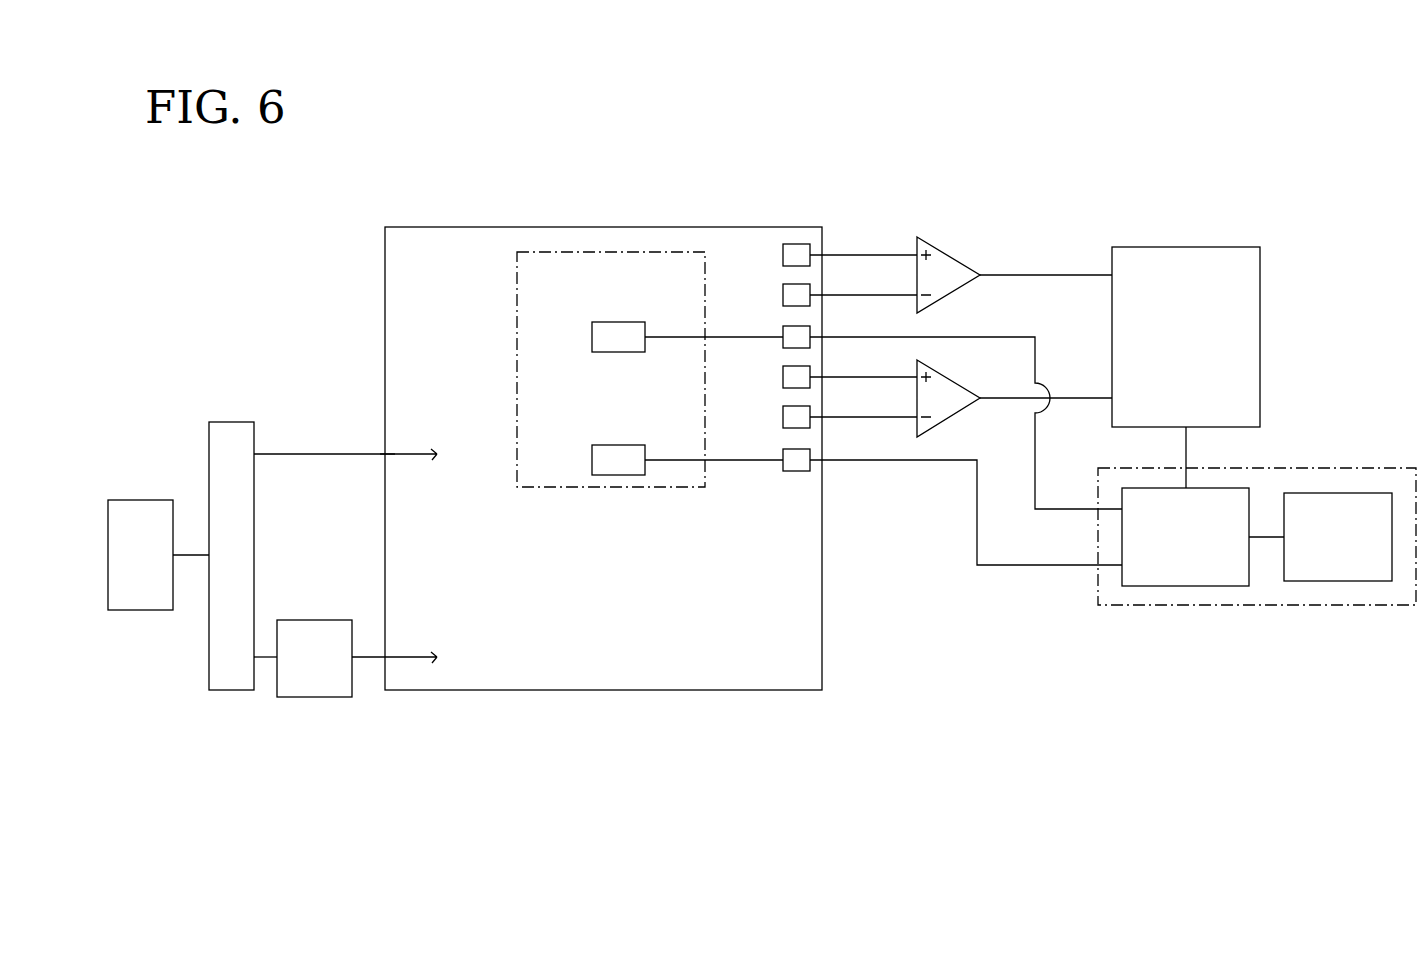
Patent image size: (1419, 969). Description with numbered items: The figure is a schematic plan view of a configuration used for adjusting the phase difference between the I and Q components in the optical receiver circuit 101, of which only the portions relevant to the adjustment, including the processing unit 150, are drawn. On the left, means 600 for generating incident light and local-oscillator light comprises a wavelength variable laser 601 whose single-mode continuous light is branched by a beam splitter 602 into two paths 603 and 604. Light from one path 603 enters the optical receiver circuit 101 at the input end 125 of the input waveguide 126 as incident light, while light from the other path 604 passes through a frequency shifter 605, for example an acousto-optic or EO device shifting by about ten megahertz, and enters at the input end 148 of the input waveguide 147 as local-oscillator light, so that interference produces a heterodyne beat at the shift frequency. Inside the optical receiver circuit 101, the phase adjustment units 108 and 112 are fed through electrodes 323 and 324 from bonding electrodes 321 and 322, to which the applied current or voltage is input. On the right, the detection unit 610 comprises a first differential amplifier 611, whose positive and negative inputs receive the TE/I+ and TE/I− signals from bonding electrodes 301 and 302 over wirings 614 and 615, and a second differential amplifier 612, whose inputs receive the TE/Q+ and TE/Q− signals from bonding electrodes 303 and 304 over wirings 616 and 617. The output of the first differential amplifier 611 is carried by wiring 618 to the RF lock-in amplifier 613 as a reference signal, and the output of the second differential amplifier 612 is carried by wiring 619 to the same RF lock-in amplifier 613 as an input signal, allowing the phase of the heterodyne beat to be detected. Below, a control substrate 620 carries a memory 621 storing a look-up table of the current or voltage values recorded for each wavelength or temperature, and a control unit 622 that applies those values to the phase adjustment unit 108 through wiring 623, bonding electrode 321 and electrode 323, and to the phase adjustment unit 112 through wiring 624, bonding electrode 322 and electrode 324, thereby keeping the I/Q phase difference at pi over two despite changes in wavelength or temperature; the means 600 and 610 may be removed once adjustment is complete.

The means for generating incident light and local-oscillator light 600 is at (183, 686).
The wavelength variable laser 601 is at (138, 498).
The beam splitter 602 is at (230, 420).
The path 603 is at (286, 452).
The path 604 is at (266, 660).
The frequency shifter 605 is at (294, 672).
The input end 125 is at (383, 452).
The input waveguide 126 is at (410, 452).
The input waveguide 147 is at (410, 655).
The input end 148 is at (383, 655).
The optical receiver circuit 101 is at (385, 254).
The processing unit 150 is at (517, 285).
The phase adjustment unit 108 is at (592, 337).
The phase adjustment unit 112 is at (592, 460).
The electrode 323 is at (672, 336).
The electrode 324 is at (672, 458).
The bonding electrode 301 is at (783, 255).
The bonding electrode 302 is at (783, 295).
The bonding electrode 303 is at (783, 381).
The bonding electrode 304 is at (783, 421).
The bonding electrode 321 is at (783, 341).
The bonding electrode 322 is at (783, 464).
The wiring 614 is at (900, 253).
The wiring 615 is at (900, 294).
The wiring 616 is at (900, 375).
The wiring 617 is at (900, 415).
The first differential amplifier 611 is at (950, 256).
The second differential amplifier 612 is at (950, 379).
The wiring 618 is at (1077, 272).
The wiring 619 is at (1077, 396).
The RF lock-in amplifier 613 is at (1186, 246).
The detection unit 610 is at (1254, 232).
The control substrate 620 is at (1263, 607).
The memory 621 is at (1346, 583).
The control unit 622 is at (1183, 588).
The wiring 623 is at (1070, 507).
The wiring 624 is at (1010, 563).